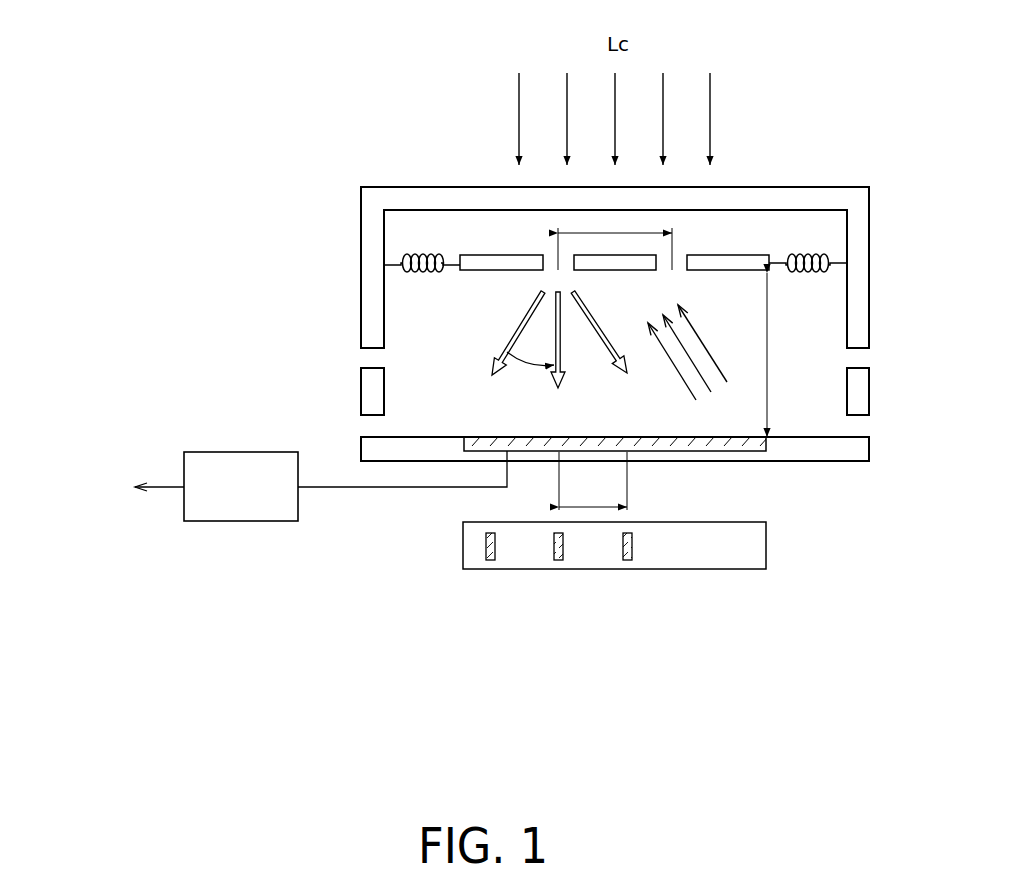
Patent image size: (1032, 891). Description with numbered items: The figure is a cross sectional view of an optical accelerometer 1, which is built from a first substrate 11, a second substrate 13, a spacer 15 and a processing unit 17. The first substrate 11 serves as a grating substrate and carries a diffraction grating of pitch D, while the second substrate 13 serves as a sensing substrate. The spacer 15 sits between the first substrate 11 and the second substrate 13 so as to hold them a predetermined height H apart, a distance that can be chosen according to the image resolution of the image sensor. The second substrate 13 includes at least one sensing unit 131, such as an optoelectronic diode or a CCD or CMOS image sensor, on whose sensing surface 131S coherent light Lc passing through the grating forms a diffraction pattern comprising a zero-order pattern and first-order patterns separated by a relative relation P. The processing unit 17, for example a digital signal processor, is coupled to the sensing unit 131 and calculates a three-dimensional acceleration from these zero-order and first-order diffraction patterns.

The optical accelerometer 1 is at (317, 115).
The first substrate 11 is at (858, 243).
The second substrate 13 is at (855, 450).
The sensing unit 131 is at (766, 444).
The sensing surface 131S is at (746, 552).
The spacer 15 is at (858, 392).
The processing unit 17 is at (218, 522).